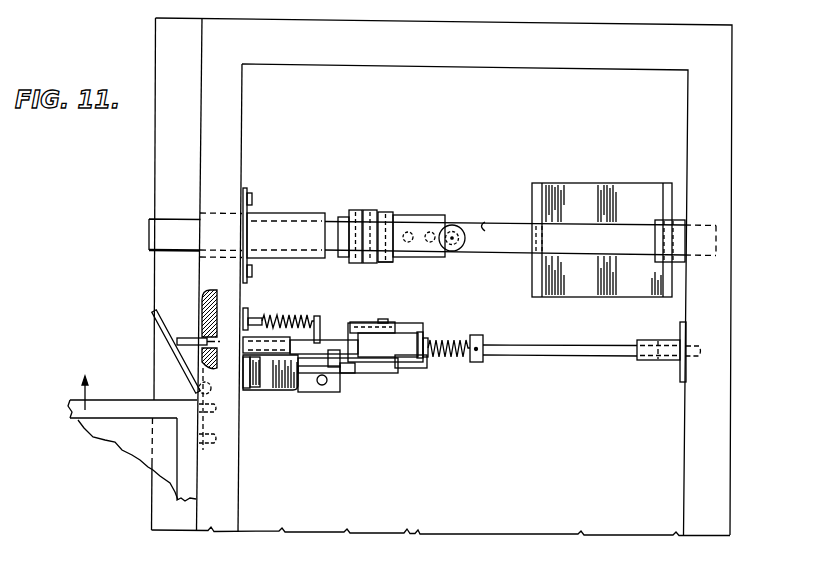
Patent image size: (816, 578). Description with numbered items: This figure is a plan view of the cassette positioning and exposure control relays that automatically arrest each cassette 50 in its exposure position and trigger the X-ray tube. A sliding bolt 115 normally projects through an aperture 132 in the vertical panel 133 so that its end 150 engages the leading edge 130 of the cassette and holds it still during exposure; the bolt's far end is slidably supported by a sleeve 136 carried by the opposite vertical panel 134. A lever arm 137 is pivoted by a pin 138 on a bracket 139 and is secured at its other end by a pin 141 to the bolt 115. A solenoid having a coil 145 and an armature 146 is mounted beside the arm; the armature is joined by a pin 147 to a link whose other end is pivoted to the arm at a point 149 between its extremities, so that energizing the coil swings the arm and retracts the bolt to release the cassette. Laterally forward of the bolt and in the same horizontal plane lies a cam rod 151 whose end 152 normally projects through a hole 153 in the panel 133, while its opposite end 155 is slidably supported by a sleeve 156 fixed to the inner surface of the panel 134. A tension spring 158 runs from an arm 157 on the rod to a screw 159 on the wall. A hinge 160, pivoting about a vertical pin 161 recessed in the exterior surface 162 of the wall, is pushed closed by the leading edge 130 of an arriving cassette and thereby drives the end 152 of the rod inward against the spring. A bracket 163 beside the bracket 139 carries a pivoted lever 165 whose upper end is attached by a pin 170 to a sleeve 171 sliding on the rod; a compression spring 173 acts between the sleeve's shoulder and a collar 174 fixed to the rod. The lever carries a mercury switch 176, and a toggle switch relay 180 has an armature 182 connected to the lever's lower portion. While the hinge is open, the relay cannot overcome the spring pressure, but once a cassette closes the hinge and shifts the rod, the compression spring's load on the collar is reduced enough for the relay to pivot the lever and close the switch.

The cassette 50 is at (99, 434).
The sliding bolt 115 is at (552, 244).
The leading edge 130 is at (112, 399).
The aperture 132 is at (243, 198).
The vertical panel 133 is at (229, 487).
The vertical panel 134 is at (696, 423).
The sleeve 136 is at (681, 220).
The lever arm 137 is at (343, 216).
The pin 138 is at (383, 262).
The bracket 139 is at (438, 215).
The pin 141 is at (368, 210).
The coil 145 is at (585, 193).
The armature 146 is at (485, 219).
The pin 147 is at (453, 244).
The point 149 is at (383, 212).
The end 150 is at (168, 228).
The cam rod 151 is at (565, 350).
The end 152 is at (183, 339).
The hole 153 is at (204, 294).
The end 155 is at (627, 350).
The sleeve 156 is at (660, 360).
The arm 157 is at (322, 336).
The tension spring 158 is at (292, 314).
The screw 159 is at (256, 311).
The hinge 160 is at (160, 326).
The vertical pin 161 is at (210, 399).
The exterior surface 162 is at (200, 275).
The bracket 163 is at (368, 373).
The lever 165 is at (403, 366).
The pin 170 is at (372, 330).
The sleeve 171 is at (400, 345).
The compression spring 173 is at (458, 345).
The collar 174 is at (484, 343).
The mercury switch 176 is at (326, 390).
The toggle switch relay 180 is at (268, 391).
The armature 182 is at (348, 372).